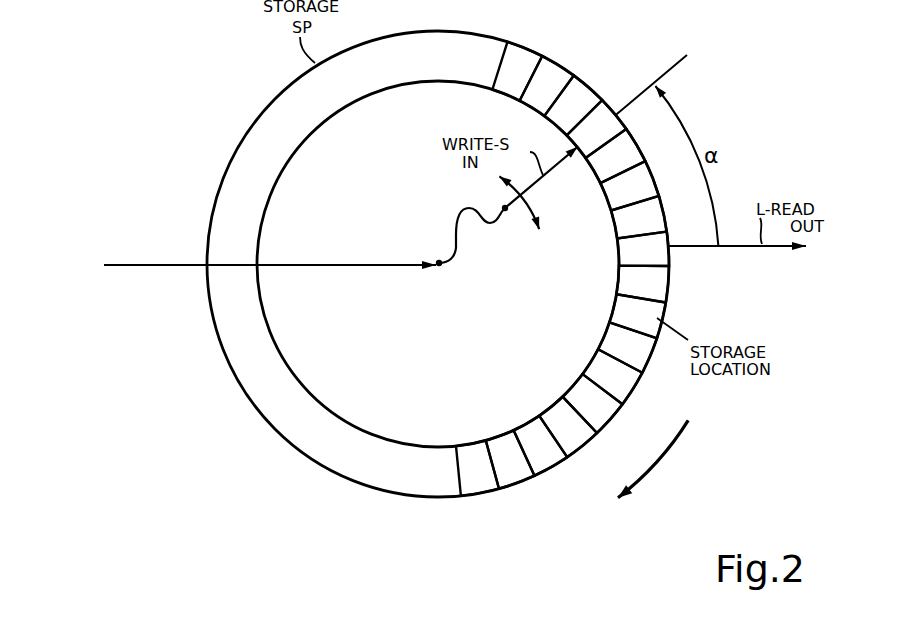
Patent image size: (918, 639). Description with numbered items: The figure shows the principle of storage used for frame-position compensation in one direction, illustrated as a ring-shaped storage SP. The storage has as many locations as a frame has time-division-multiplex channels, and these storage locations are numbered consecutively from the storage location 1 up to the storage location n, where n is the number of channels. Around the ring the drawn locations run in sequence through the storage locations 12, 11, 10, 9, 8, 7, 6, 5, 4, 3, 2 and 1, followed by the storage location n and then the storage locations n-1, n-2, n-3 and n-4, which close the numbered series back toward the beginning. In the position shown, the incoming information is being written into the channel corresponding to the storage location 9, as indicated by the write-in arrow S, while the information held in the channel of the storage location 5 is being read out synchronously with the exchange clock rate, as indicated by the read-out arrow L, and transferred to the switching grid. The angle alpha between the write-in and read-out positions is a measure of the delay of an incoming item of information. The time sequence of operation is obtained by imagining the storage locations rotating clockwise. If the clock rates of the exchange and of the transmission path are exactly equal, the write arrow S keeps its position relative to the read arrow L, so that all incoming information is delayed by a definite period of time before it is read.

The storage location 1 is at (613, 376).
The storage location 2 is at (627, 347).
The storage location 3 is at (638, 316).
The storage location 4 is at (643, 284).
The storage location 5 is at (643, 249).
The storage location 6 is at (639, 217).
The storage location 7 is at (629, 185).
The storage location 8 is at (616, 156).
The storage location 9 is at (597, 129).
The storage location 10 is at (573, 106).
The storage location 11 is at (547, 86).
The storage location 12 is at (517, 71).
The storage location n is at (593, 403).
The storage location n-1 is at (568, 427).
The storage location n-2 is at (541, 446).
The storage location n-3 is at (510, 459).
The storage location n-4 is at (477, 468).